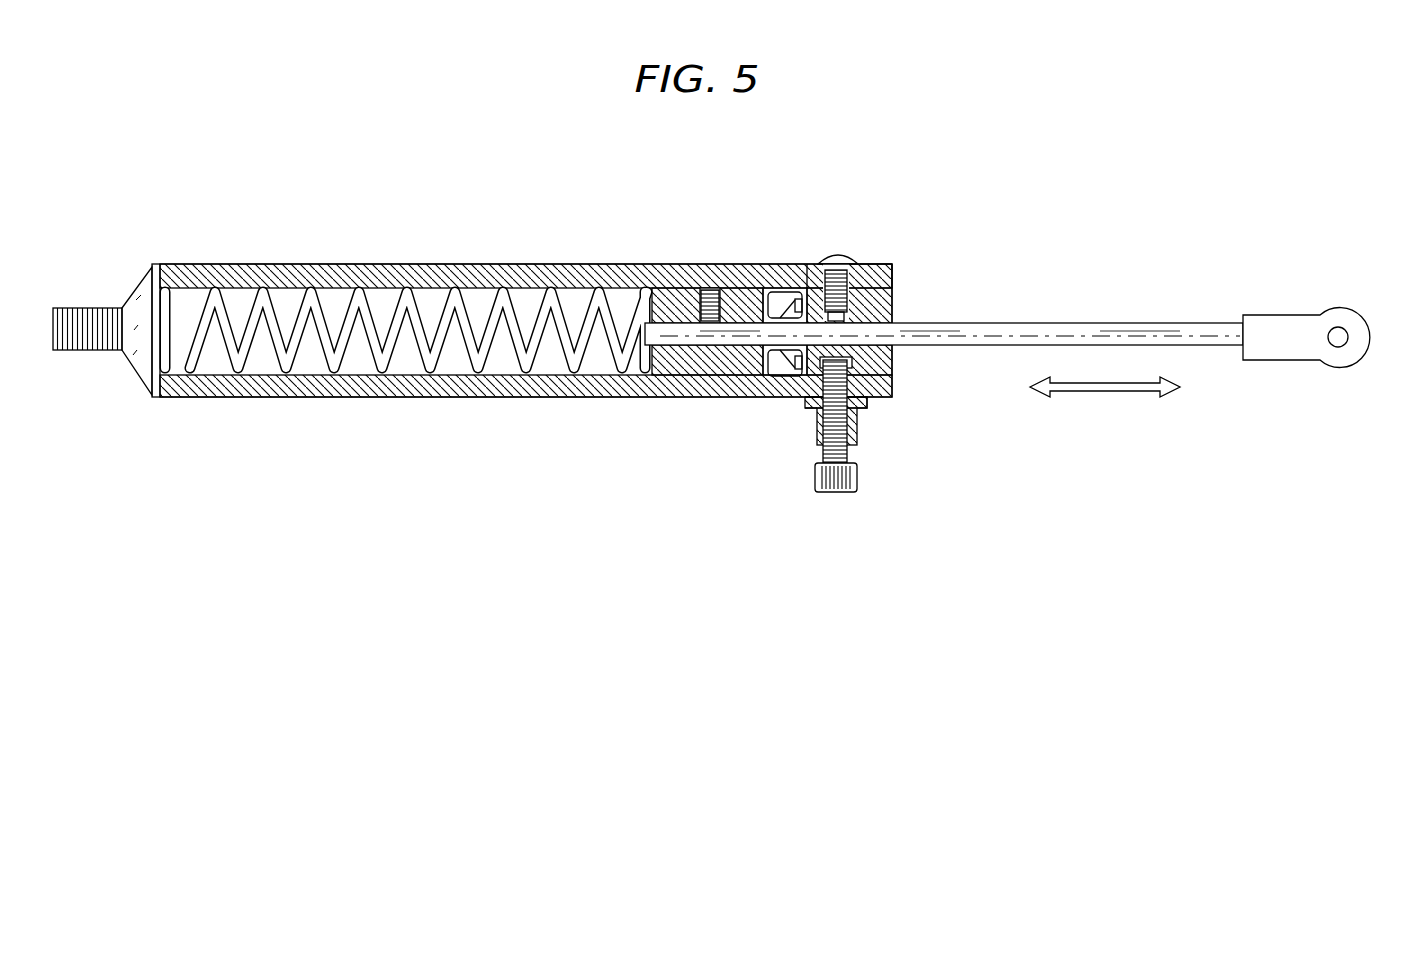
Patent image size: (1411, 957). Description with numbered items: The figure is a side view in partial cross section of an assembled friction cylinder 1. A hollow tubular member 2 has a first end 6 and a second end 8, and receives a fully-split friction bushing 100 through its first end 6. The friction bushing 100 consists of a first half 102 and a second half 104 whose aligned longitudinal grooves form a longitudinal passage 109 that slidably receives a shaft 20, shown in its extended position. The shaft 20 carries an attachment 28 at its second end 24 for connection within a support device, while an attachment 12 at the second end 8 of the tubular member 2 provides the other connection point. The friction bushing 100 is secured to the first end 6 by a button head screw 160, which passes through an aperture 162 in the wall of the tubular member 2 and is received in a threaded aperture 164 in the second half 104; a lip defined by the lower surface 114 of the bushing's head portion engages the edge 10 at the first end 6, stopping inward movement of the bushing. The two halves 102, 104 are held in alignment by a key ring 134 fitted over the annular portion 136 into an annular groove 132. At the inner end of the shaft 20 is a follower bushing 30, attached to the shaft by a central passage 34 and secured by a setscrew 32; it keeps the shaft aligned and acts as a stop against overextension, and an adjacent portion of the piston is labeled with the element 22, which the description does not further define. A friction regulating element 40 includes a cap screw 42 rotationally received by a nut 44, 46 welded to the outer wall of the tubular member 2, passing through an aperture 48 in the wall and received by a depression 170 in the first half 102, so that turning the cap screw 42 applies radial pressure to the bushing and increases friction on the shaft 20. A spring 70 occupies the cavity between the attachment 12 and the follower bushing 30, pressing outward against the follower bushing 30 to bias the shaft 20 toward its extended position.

The friction cylinder 1 is at (320, 118).
The tubular member 2 is at (447, 397).
The first end 6 is at (775, 268).
The second end 8 is at (226, 264).
The edge 10 is at (863, 270).
The attachment 12 is at (91, 284).
The shaft 20 is at (1057, 322).
The piston body 22 is at (732, 290).
The second end 24 is at (1183, 325).
The attachment 28 is at (1338, 287).
The follower bushing 30 is at (682, 376).
The setscrew 32 is at (713, 284).
The central passage 34 is at (680, 305).
The friction regulating element 40 is at (770, 489).
The cap screw 42 is at (833, 492).
The nut 44 is at (862, 420).
The nut 46 is at (852, 452).
The aperture 48 is at (862, 408).
The spring 70 is at (300, 372).
The friction bushing 100 is at (915, 252).
The first half 102 is at (893, 358).
The second half 104 is at (893, 295).
The longitudinal passage 109 is at (923, 323).
The lower surface 114 is at (875, 270).
The annular groove 132 is at (797, 373).
The key ring 134 is at (800, 290).
The annular portion 136 is at (787, 360).
The button head screw 160 is at (840, 262).
The aperture 162 is at (808, 282).
The threaded aperture 164 is at (890, 268).
The depression 170 is at (887, 392).